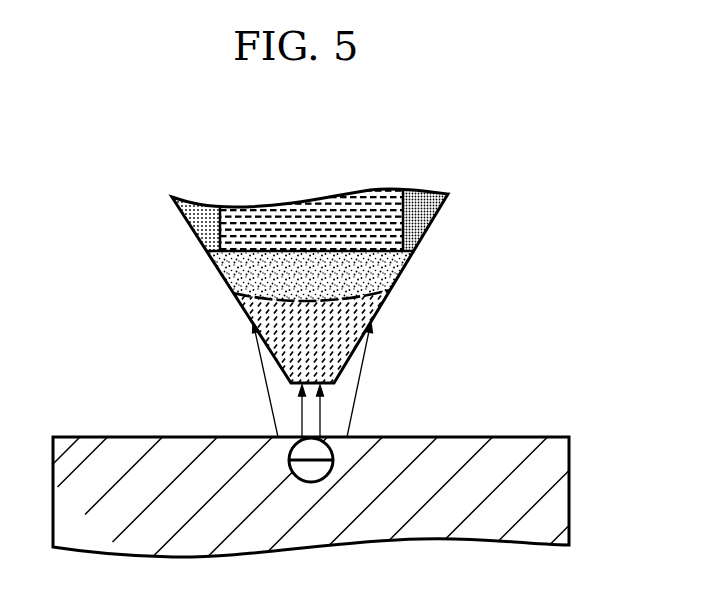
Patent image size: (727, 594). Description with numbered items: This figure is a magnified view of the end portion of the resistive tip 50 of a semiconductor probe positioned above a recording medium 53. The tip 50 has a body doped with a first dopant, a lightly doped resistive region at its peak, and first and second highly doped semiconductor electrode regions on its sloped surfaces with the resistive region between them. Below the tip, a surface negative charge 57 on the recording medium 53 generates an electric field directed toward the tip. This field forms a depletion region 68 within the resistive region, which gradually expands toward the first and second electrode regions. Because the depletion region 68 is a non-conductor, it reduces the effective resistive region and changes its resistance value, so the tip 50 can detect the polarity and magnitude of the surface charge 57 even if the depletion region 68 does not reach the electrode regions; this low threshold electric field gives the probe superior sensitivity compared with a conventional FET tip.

The tip 50 is at (332, 252).
The recording medium 53 is at (560, 481).
The surface charge 57 is at (330, 437).
The depletion region 68 is at (256, 316).